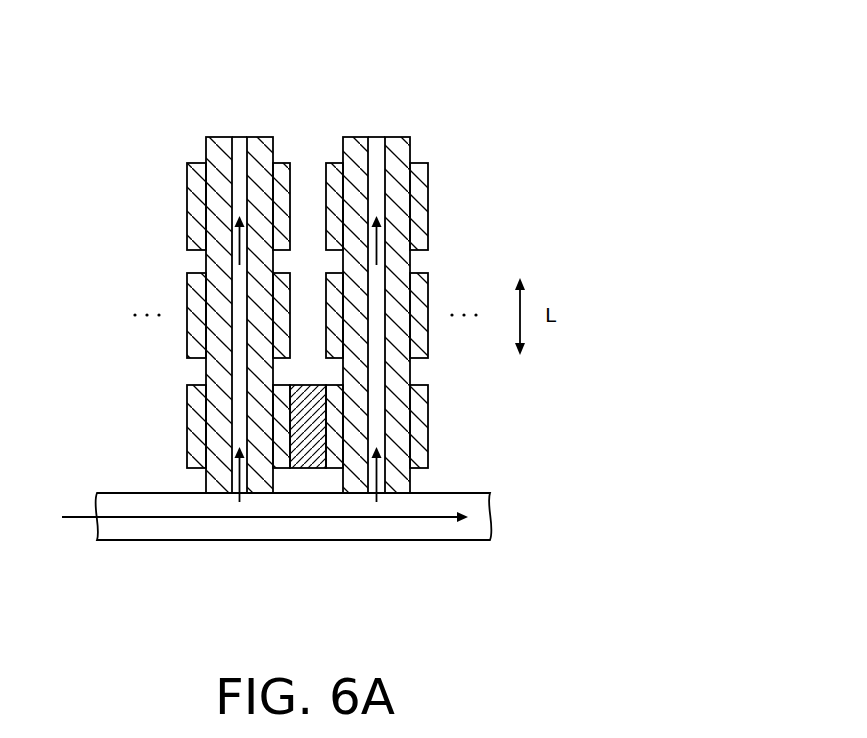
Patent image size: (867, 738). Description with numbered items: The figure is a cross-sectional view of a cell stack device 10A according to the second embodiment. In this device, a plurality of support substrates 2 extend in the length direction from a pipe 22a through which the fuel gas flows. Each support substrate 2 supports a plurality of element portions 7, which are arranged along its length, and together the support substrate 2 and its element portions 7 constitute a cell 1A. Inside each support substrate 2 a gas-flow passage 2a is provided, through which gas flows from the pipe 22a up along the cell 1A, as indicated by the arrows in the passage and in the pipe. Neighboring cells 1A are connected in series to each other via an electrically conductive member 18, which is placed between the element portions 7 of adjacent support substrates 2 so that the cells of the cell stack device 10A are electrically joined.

The cell stack device 10A is at (499, 64).
The cell 1A is at (261, 115).
The support substrate 2 is at (357, 137).
The gas-flow passage 2a is at (372, 137).
The element portion 7 is at (190, 204).
The electrically conductive member 18 is at (297, 385).
The pipe 22a is at (193, 540).